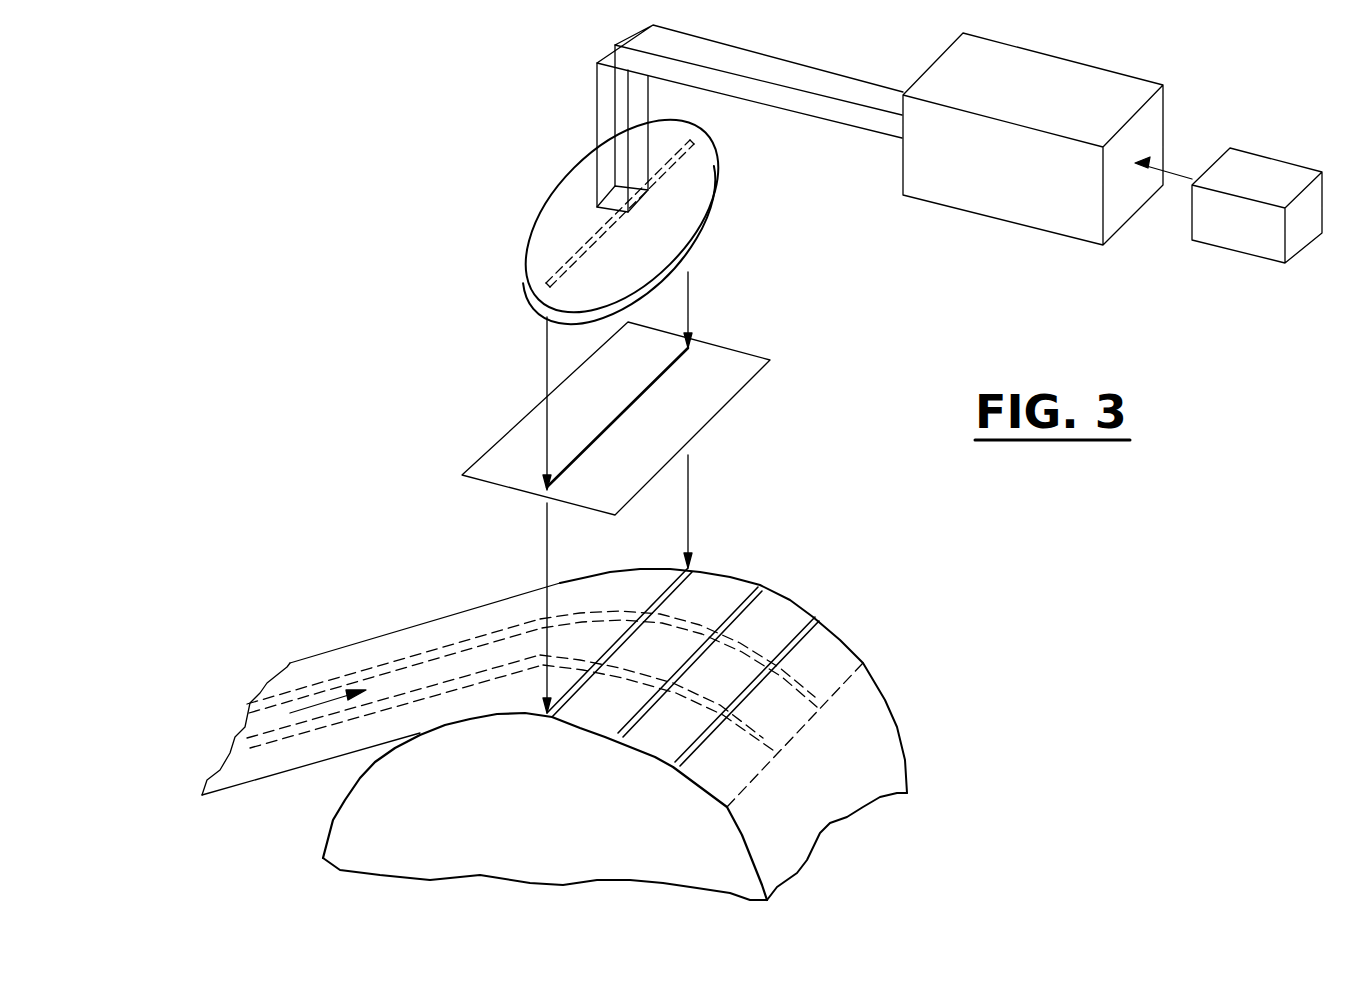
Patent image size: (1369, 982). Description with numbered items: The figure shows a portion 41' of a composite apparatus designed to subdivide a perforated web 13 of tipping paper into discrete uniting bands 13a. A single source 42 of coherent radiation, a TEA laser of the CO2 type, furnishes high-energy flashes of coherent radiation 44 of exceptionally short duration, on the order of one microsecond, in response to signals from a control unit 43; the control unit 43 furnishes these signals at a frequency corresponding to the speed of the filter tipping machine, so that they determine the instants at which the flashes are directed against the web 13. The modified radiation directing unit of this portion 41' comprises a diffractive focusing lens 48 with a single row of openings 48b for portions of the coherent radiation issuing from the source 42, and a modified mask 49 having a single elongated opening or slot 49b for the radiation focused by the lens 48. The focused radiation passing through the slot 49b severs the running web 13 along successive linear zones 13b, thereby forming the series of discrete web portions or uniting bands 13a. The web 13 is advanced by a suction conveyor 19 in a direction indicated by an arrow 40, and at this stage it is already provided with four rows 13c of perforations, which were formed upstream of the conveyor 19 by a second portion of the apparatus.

The web 13 is at (355, 662).
The uniting bands 13a is at (650, 738).
The linear zones 13b is at (692, 568).
The rows of perforations 13c is at (677, 637).
The suction conveyor 19 is at (515, 849).
The direction of yarn travel 40 is at (305, 710).
The portion of composite apparatus 41' is at (672, 492).
The source of coherent radiation 42 is at (1108, 83).
The control unit 43 is at (1272, 173).
The flashes of coherent radiation 44 is at (597, 95).
The diffractive focusing lens 48 is at (707, 232).
The row of openings 48b is at (680, 158).
The mask 49 is at (742, 352).
The elongated opening or slot 49b is at (636, 405).